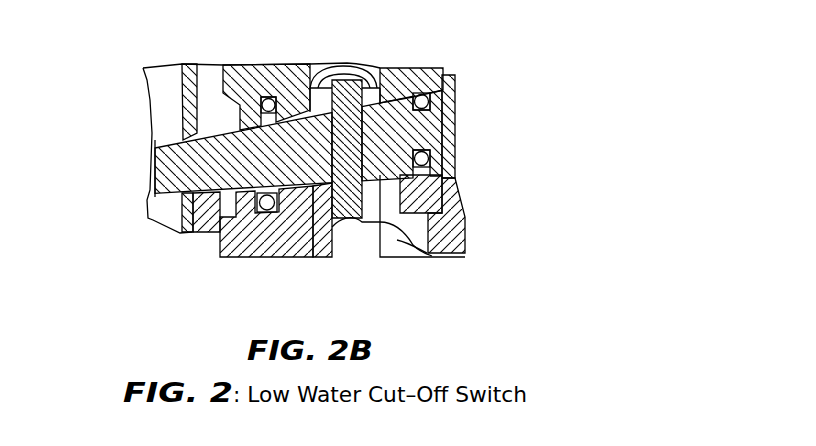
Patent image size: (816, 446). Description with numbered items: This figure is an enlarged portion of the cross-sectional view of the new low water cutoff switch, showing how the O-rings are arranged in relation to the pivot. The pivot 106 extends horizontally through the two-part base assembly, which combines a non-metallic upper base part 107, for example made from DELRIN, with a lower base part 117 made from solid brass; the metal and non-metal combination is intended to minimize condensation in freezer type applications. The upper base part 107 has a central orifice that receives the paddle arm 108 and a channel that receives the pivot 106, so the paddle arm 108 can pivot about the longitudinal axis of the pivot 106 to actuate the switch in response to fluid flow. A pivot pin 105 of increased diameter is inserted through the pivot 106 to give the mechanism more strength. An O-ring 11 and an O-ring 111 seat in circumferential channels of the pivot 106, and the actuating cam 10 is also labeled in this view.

The actuating cam 10 is at (155, 98).
The O-ring 11 is at (269, 97).
The pivot pin 105 is at (381, 75).
The pivot 106 is at (157, 172).
The upper base part 107 is at (457, 197).
The paddle arm 108 is at (363, 62).
The O-ring 111 is at (428, 100).
The lower base part 117 is at (430, 250).